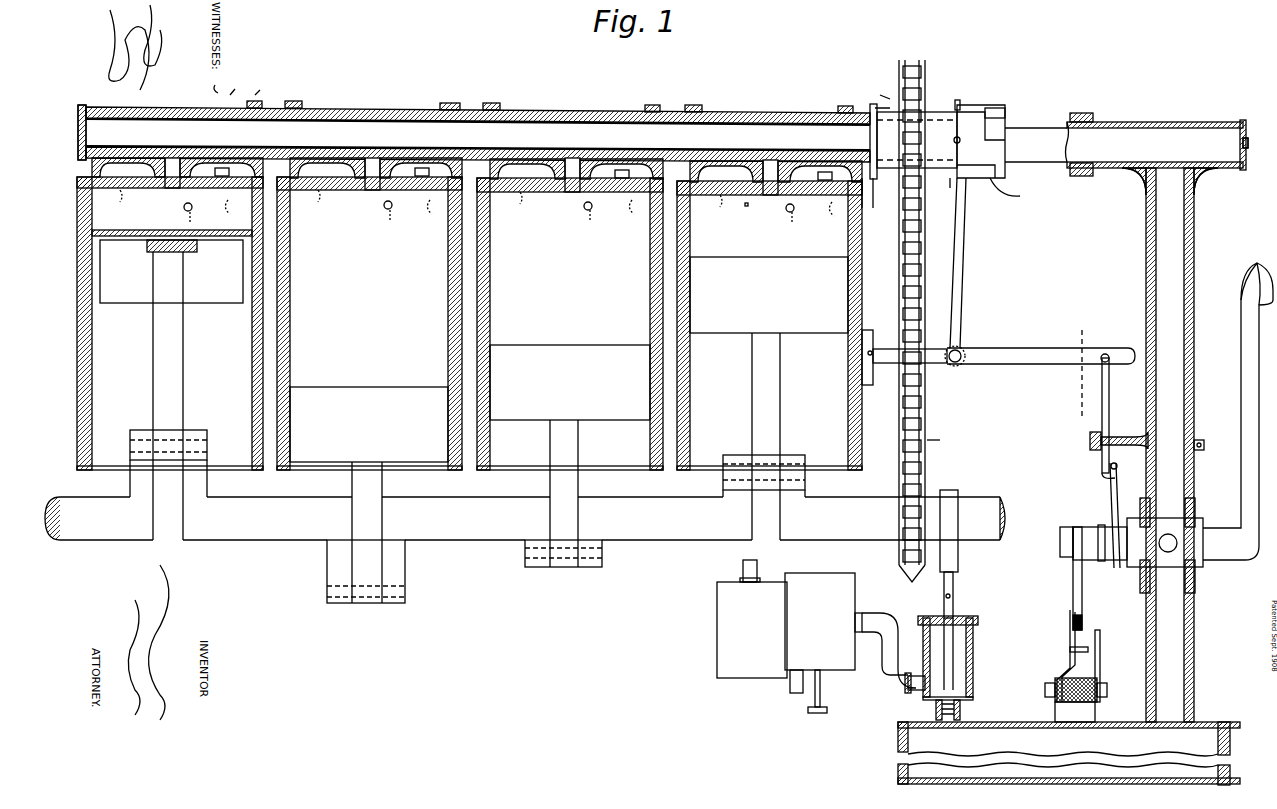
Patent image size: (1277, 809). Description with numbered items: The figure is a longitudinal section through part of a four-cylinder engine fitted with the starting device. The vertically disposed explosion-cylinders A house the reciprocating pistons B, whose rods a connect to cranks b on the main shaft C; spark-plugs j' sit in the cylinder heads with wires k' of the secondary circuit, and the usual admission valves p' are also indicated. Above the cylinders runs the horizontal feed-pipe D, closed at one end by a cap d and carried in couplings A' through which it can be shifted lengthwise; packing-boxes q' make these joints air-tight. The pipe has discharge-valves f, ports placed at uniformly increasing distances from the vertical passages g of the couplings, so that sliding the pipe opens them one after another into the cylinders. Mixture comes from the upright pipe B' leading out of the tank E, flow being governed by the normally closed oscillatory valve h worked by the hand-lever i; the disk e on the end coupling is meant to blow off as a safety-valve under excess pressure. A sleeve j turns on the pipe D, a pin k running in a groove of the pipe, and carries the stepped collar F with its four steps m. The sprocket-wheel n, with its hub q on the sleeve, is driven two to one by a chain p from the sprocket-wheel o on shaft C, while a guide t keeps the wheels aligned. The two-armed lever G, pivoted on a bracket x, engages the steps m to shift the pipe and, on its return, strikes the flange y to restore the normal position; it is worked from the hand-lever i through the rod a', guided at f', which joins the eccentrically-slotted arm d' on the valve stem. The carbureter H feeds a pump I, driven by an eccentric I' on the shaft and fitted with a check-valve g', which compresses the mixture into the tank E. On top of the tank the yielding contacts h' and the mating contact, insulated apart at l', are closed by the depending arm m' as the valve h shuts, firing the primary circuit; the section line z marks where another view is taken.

The feed-pipe D is at (377, 106).
The packing-boxes q' is at (673, 126).
The couplings A' is at (521, 81).
The cap d is at (69, 132).
The discharge-valves f is at (475, 141).
The pin k is at (477, 140).
The explosion-cylinders A is at (469, 323).
The vertical passages g is at (479, 211).
The spark-plugs j' is at (527, 197).
The admission valves p' is at (501, 220).
The pipe b' is at (612, 267).
The bracket x is at (938, 372).
The pistons B is at (474, 351).
The piston rods a is at (481, 427).
The cranks b is at (467, 516).
The main shaft C is at (668, 545).
The sprocket-wheel o is at (909, 324).
The hub q is at (917, 140).
The stepped collar F is at (1008, 150).
The sleeve j is at (960, 148).
The wires k' is at (915, 93).
The steps m is at (1002, 145).
The sprocket-wheel n is at (877, 94).
The flange y is at (950, 178).
The guide t is at (869, 201).
The disk e is at (1253, 152).
The upright pipe B' is at (1166, 445).
The two-armed lever G is at (970, 340).
The section line Z-Z z is at (1105, 441).
The rod a' is at (1096, 418).
The guide f' is at (1101, 446).
The eccentrically-slotted arm d' is at (1099, 515).
The oscillatory valve h is at (1141, 524).
The hand-lever i is at (1241, 455).
The pump I is at (948, 668).
The eccentric I' is at (963, 590).
The carbureter H is at (770, 682).
The tank E is at (898, 741).
The check-valve g' is at (1063, 749).
The circuit-maker and -breaker m' is at (1061, 578).
The yielding electric-contact h' is at (1079, 636).
The insulation l' is at (1066, 695).
The chain p is at (936, 444).